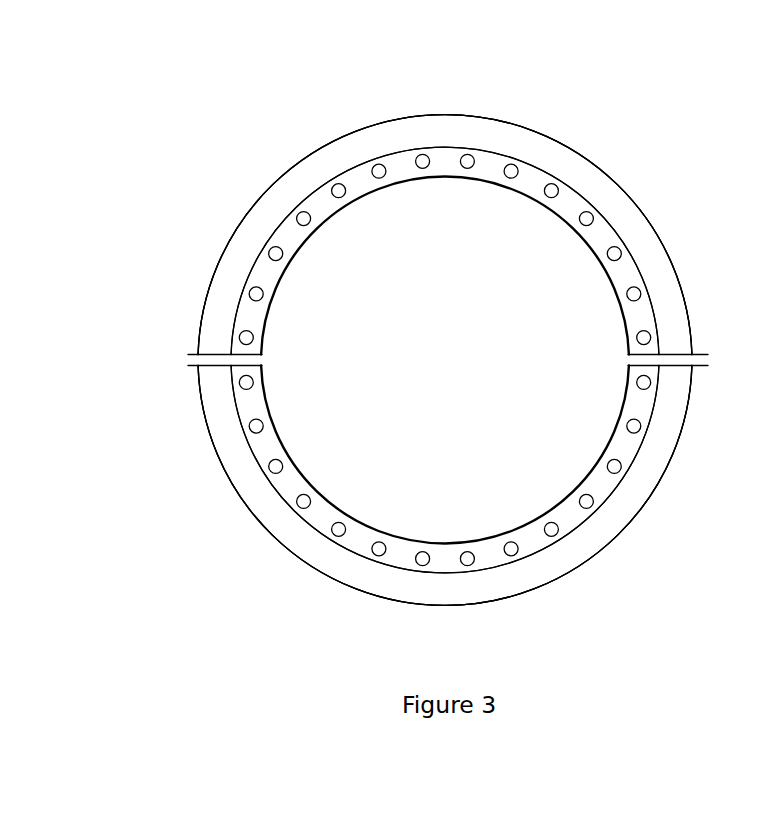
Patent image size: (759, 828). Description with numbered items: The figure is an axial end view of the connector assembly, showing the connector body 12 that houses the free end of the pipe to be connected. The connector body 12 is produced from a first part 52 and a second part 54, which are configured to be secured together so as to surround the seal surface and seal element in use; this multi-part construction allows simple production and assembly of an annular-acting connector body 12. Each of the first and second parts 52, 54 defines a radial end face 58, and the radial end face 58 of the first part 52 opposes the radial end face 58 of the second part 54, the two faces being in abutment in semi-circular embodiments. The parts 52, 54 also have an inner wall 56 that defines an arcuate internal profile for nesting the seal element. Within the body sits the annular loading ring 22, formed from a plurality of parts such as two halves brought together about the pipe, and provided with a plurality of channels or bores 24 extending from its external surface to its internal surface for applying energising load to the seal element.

The connector body 12 is at (327, 147).
The annular loading ring 22 is at (355, 530).
The channels or bores 24 is at (636, 293).
The first part 52 is at (503, 125).
The second part 54 is at (630, 508).
The inner wall 56 is at (362, 163).
The radial end face 58 is at (208, 360).